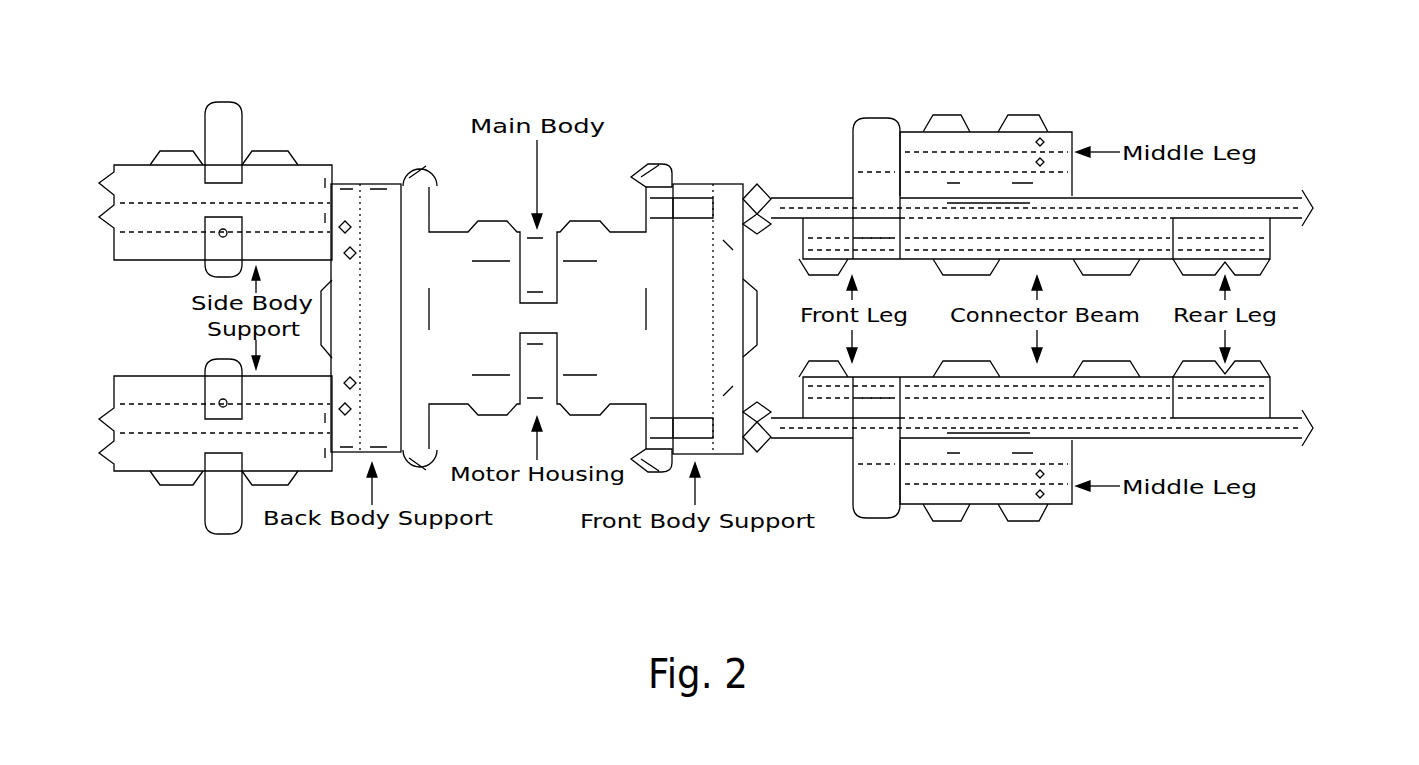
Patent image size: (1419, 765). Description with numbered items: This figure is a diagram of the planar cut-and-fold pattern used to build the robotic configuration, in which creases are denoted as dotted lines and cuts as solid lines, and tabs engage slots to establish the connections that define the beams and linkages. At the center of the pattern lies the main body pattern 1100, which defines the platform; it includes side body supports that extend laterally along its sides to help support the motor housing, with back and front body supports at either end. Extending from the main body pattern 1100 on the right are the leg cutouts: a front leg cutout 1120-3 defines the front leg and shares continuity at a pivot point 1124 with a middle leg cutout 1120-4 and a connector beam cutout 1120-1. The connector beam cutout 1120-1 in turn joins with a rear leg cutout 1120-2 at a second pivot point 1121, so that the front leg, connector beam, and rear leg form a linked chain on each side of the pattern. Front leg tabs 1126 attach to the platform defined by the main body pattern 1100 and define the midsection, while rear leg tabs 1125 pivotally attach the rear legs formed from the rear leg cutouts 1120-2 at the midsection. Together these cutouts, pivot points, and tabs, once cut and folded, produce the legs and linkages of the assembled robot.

The main body pattern 1100 is at (504, 310).
The connector beam cutout 1120-1 is at (1063, 258).
The rear leg cutout 1120-2 is at (1265, 249).
The front leg cutout 1120-3 is at (880, 255).
The middle leg cutout 1120-4 is at (983, 505).
The pivot point 1121 is at (1175, 183).
The pivot point 1124 is at (875, 100).
The rear leg tabs 1125 is at (432, 163).
The front leg tabs 1126 is at (640, 168).